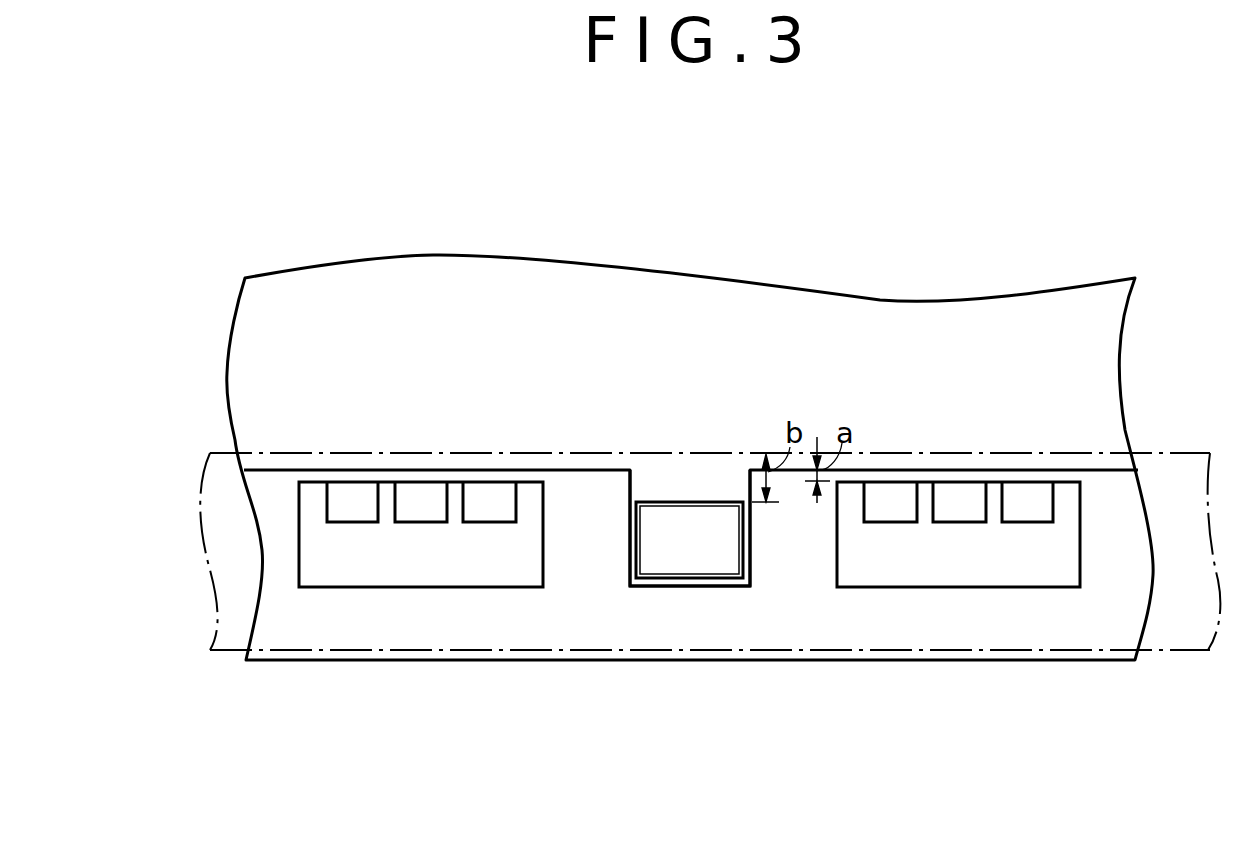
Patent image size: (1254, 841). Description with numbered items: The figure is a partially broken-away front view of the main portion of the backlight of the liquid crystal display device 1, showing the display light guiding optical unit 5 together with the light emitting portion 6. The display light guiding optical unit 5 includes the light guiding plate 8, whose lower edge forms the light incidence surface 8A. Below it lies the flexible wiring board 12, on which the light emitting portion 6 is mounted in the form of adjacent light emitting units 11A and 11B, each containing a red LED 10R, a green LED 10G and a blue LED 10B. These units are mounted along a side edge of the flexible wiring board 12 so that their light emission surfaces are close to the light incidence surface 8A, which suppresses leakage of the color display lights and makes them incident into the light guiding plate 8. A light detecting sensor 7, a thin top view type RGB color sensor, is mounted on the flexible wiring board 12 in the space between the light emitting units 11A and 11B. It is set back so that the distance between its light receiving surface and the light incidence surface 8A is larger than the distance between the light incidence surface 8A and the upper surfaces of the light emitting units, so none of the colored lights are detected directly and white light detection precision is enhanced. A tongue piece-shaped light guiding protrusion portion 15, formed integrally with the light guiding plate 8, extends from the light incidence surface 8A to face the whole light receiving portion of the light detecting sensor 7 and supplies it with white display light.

The liquid crystal display device 1 is at (787, 213).
The display light guiding optical unit 5 is at (173, 355).
The light emitting portion 6 is at (187, 578).
The light detecting sensor 7 is at (688, 540).
The light guiding plate 8 is at (442, 283).
The light incidence surface 8A is at (562, 474).
The red LED 10R is at (353, 508).
The green LED 10G is at (421, 508).
The blue LED 10B is at (490, 508).
The light emitting unit 11A is at (543, 713).
The light emitting unit 11B is at (1082, 713).
The flexible wiring board 12 is at (1170, 481).
The light guiding protrusion portion 15 is at (643, 482).